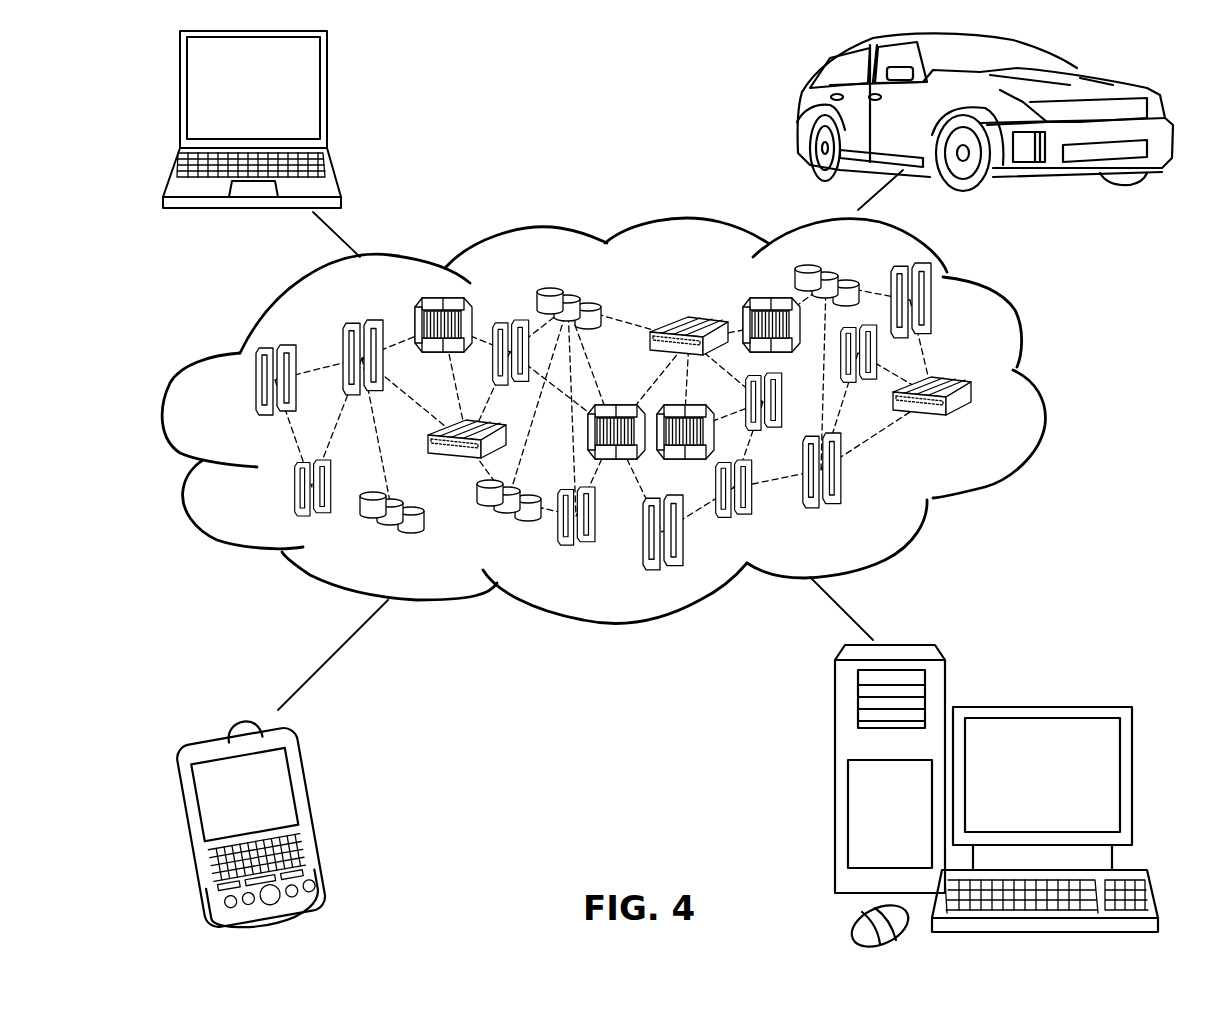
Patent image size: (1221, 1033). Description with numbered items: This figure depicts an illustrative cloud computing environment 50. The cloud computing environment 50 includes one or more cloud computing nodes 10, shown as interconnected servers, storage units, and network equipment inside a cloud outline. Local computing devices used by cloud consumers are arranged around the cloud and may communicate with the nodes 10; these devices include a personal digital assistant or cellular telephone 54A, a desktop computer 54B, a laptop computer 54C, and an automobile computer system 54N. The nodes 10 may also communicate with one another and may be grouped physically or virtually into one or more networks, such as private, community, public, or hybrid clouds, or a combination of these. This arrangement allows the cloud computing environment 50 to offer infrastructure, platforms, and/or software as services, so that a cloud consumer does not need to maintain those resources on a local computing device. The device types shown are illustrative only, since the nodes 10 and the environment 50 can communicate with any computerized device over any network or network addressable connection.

The cloud computing environment 50 is at (1040, 392).
The cloud computing nodes 10 is at (978, 428).
The personal digital assistant (PDA) or cellular telephone 54A is at (317, 808).
The desktop computer 54B is at (1040, 707).
The laptop computer 54C is at (327, 97).
The automobile computer system 54N is at (798, 115).